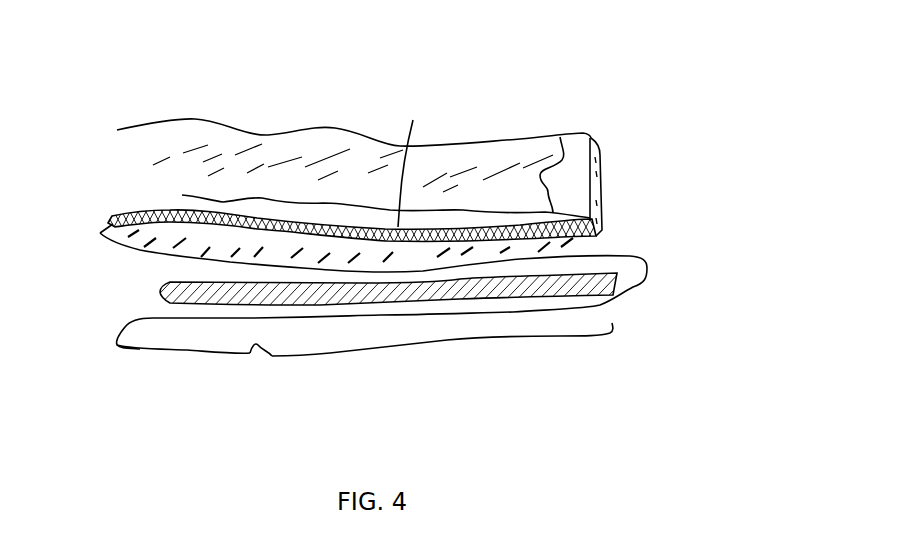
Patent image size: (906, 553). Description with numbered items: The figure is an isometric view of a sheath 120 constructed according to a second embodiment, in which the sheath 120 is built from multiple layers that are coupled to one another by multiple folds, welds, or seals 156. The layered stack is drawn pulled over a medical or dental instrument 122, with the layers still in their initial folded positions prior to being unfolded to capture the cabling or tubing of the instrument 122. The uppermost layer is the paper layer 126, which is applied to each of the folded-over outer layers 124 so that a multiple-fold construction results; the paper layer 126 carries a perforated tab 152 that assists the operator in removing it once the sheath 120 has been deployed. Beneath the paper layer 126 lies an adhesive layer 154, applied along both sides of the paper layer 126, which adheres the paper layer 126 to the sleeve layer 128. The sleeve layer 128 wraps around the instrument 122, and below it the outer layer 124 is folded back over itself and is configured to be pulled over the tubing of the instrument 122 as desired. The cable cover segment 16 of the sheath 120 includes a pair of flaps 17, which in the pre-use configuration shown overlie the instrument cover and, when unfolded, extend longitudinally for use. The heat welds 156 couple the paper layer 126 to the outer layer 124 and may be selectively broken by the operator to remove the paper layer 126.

The sheath 120 is at (489, 34).
The paper layer 126 is at (312, 135).
The adhesive layer 154 is at (184, 198).
The perforated tab 152 is at (555, 150).
The heat welds 156 is at (614, 171).
The flaps 17 is at (242, 395).
The cable cover segment 16 is at (342, 366).
The sleeve layer 128 is at (657, 286).
The medical or dental instrument 122 is at (609, 302).
The outer layer 124 is at (450, 352).